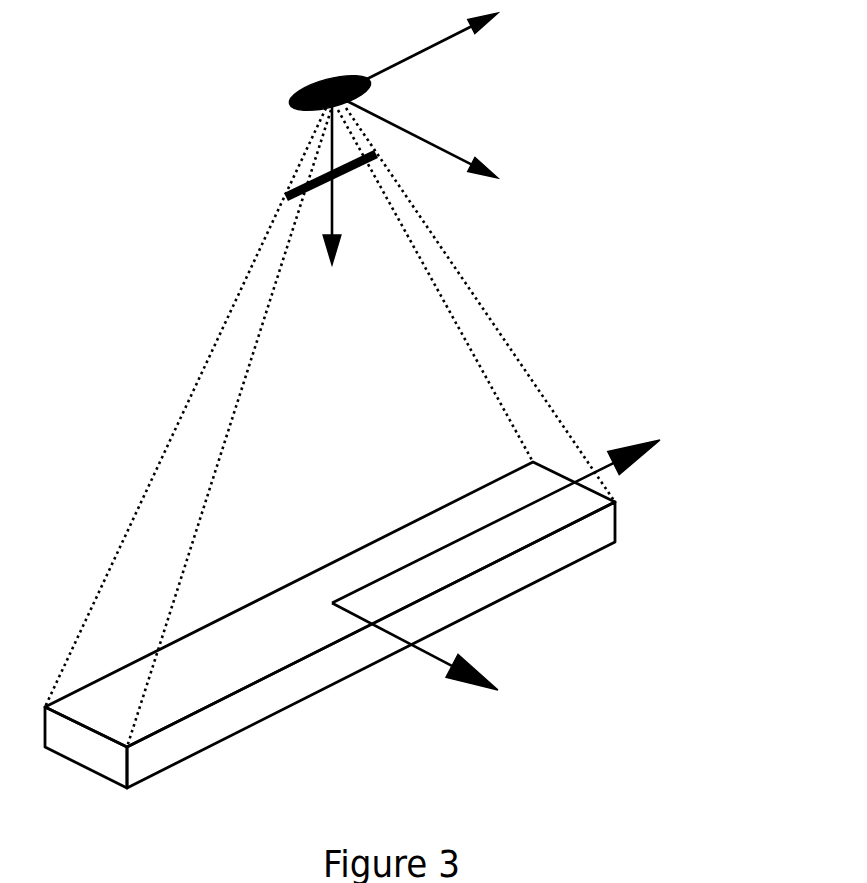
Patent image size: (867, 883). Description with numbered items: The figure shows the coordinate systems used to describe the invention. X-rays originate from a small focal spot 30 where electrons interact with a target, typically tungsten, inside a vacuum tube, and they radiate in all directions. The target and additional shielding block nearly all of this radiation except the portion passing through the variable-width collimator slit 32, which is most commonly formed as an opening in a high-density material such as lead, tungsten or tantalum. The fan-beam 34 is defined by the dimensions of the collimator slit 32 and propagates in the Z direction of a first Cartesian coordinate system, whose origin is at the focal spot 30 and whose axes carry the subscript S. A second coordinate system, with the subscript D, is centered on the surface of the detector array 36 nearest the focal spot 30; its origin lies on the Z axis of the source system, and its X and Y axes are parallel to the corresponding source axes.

The focal spot 30 is at (315, 75).
The collimator slit 32 is at (270, 177).
The fan-beam 34 is at (270, 402).
The detector array 36 is at (207, 725).